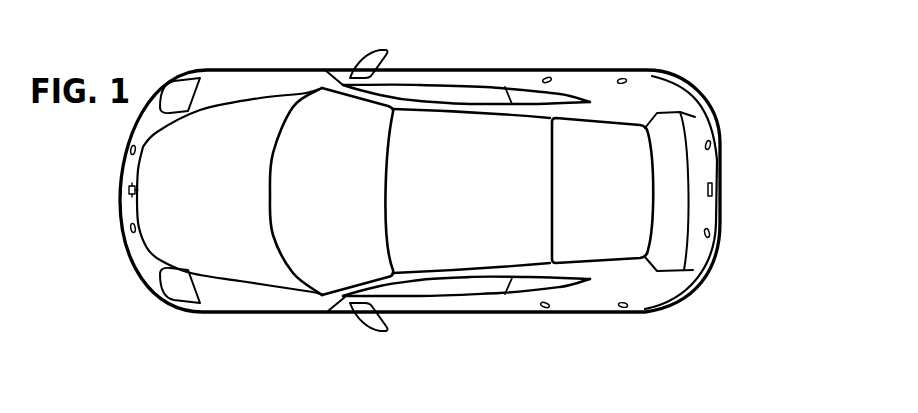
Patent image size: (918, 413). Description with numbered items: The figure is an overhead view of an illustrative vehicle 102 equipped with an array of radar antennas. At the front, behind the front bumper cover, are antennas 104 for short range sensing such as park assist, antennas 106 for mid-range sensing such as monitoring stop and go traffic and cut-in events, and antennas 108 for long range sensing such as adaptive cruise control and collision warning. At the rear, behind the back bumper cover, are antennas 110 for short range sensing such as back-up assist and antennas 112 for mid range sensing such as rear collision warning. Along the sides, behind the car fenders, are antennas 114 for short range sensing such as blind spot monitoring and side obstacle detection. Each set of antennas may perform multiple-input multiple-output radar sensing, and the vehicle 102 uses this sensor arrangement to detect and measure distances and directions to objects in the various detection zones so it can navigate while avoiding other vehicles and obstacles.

The vehicle 102 is at (298, 313).
The antennas for short range sensing 104 is at (129, 225).
The antennas for mid-range sensing 106 is at (123, 203).
The antennas for long range sensing 108 is at (128, 191).
The antennas for short range sensing 110 is at (713, 226).
The antennas for mid range sensing 112 is at (714, 192).
The antennas for short range sensing 114 is at (551, 78).